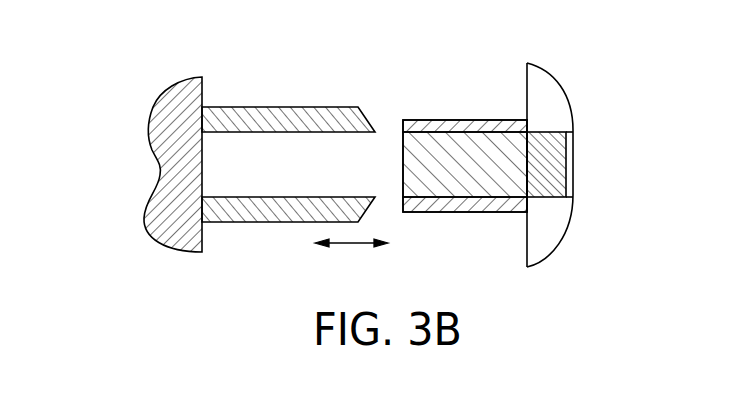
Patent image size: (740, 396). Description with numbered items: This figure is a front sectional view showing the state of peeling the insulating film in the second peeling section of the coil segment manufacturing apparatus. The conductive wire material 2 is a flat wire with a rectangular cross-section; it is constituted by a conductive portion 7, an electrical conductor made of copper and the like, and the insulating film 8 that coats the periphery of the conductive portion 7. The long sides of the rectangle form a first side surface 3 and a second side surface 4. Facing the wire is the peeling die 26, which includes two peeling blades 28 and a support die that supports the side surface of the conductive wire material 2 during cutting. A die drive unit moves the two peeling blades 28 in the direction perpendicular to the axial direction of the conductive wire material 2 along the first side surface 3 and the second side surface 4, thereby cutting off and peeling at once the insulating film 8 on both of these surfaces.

The conductive wire material 2 is at (486, 141).
The first side surface 3 is at (428, 117).
The second side surface 4 is at (405, 213).
The conductive portion 7 is at (463, 180).
The insulating film 8 is at (505, 207).
The peeling die 26 is at (147, 90).
The peeling blades 28 is at (268, 107).